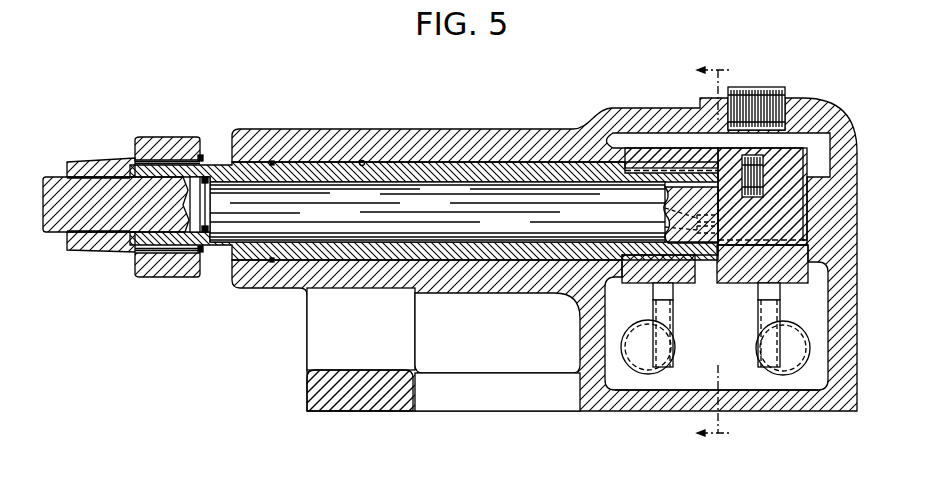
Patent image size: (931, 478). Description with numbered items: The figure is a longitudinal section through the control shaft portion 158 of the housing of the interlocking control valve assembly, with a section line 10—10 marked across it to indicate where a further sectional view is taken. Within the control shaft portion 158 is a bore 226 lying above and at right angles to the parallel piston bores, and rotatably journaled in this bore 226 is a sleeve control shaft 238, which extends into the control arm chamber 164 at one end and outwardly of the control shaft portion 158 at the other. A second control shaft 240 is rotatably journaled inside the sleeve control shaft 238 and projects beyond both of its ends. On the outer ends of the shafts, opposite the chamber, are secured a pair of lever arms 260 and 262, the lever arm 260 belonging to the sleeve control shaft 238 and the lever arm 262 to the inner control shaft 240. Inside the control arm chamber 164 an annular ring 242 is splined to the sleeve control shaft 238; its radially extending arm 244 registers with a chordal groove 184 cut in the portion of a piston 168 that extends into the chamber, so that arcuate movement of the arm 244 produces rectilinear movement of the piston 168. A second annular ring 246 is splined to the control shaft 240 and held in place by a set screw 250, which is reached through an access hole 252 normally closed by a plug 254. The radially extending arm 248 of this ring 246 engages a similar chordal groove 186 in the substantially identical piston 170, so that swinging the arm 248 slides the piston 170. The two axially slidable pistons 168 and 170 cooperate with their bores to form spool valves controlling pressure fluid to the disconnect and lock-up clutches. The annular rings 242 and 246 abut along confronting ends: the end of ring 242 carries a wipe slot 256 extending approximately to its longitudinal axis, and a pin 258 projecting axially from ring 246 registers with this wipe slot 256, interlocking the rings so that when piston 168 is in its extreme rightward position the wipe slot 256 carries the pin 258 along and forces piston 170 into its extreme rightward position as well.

The section line 10- 10 is at (713, 254).
The control shaft portion 158 is at (329, 138).
The control arm chamber 164 is at (745, 382).
The piston 168 is at (648, 376).
The piston 170 is at (784, 374).
The chordal groove 184 is at (655, 320).
The chordal groove 186 is at (783, 328).
The bore 226 is at (367, 161).
The sleeve control shaft 238 is at (420, 170).
The control shaft 240 is at (492, 192).
The annular ring 242 is at (640, 150).
The radially extending arm 244 is at (677, 303).
The annular ring 246 is at (783, 160).
The radially extending arm 248 is at (762, 315).
The set screw 250 is at (763, 153).
The access hole 252 is at (735, 102).
The plug 254 is at (787, 85).
The wipe slot 256 is at (653, 227).
The pin 258 is at (653, 207).
The lever arm 260 is at (177, 140).
The lever arm 262 is at (102, 158).